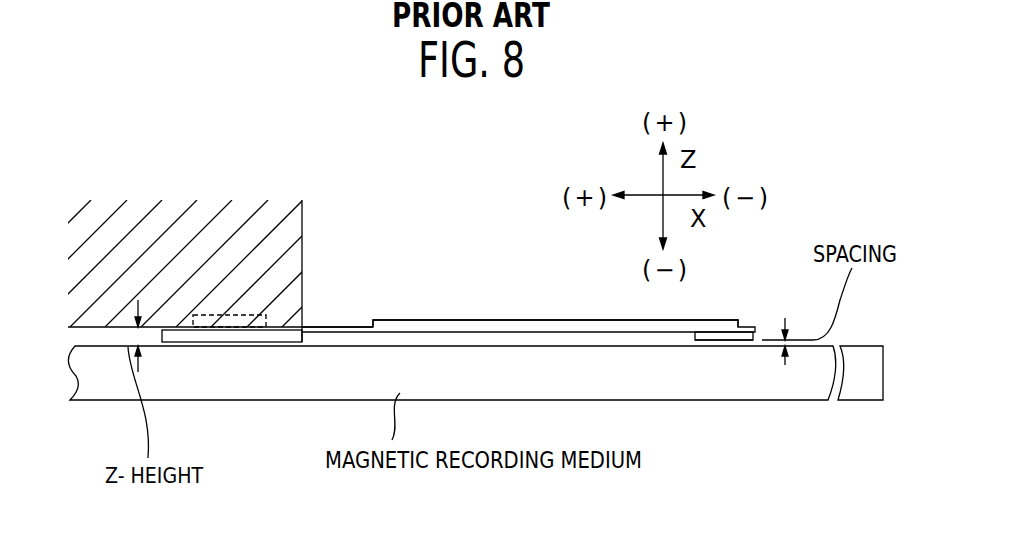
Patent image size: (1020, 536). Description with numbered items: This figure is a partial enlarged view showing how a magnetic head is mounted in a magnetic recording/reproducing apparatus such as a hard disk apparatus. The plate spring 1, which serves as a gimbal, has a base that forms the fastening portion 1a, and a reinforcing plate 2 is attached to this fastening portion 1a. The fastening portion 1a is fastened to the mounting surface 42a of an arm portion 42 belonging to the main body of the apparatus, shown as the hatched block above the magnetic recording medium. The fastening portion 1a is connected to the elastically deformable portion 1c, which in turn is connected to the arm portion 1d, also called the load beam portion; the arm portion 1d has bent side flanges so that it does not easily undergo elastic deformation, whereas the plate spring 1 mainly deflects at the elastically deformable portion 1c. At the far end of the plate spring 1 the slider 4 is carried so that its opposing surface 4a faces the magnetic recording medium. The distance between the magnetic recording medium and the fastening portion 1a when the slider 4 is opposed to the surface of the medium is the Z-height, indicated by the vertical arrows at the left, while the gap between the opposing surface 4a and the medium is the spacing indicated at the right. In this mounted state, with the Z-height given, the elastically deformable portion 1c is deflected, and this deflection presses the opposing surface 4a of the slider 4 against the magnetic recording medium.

The plate spring (gimbal) 1 is at (421, 296).
The fastening portion (mounting portion) 1a is at (196, 331).
The elastically deformable portion 1c is at (342, 327).
The arm portion (load beam portion) 1d is at (530, 327).
The reinforcing plate 2 is at (265, 328).
The slider 4 is at (748, 328).
The opposing surface 4a is at (727, 341).
The arm portion 42 is at (295, 228).
The mounting surface 42a is at (95, 328).